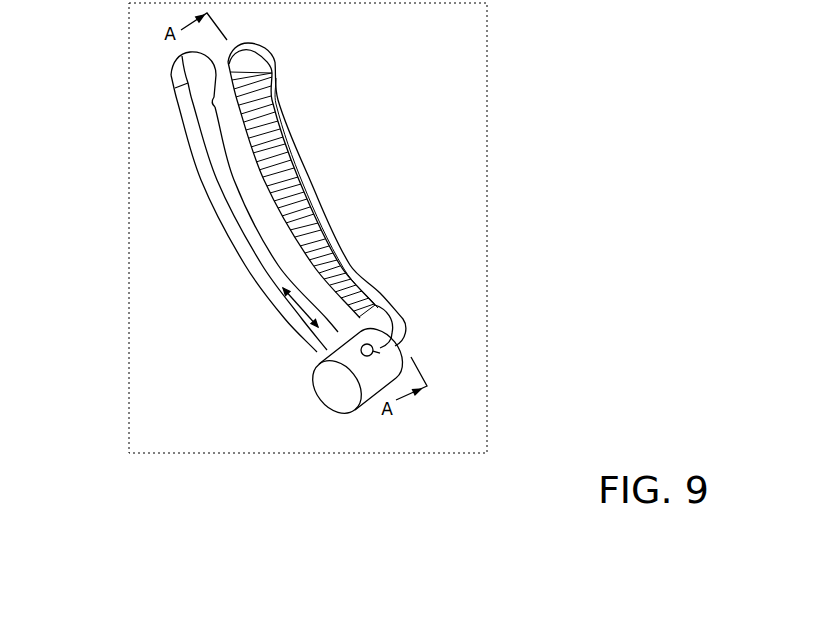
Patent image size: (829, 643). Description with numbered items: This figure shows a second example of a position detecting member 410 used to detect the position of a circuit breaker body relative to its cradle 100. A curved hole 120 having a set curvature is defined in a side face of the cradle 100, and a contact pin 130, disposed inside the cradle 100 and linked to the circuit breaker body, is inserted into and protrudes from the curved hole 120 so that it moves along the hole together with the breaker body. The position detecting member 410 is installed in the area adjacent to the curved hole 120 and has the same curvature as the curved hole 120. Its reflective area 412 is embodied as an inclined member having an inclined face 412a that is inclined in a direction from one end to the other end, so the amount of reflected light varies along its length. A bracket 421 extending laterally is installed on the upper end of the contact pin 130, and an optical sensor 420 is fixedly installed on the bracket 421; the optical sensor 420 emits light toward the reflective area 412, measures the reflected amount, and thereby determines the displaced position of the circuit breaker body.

The cradle 100 is at (370, 53).
The curved hole 120 is at (231, 231).
The contact pin 130 is at (337, 400).
The position detecting member 410 is at (352, 265).
The reflective area 412 is at (307, 206).
The inclined face 412a is at (308, 172).
The optical sensor 420 is at (375, 358).
The bracket 421 is at (382, 352).